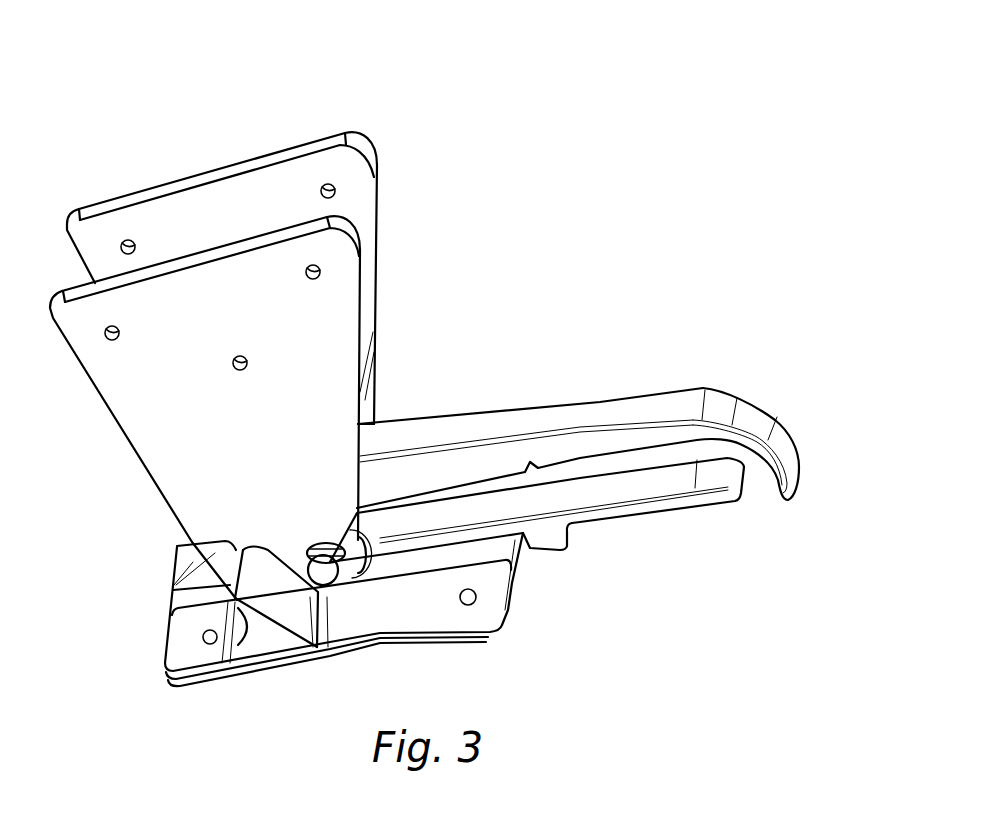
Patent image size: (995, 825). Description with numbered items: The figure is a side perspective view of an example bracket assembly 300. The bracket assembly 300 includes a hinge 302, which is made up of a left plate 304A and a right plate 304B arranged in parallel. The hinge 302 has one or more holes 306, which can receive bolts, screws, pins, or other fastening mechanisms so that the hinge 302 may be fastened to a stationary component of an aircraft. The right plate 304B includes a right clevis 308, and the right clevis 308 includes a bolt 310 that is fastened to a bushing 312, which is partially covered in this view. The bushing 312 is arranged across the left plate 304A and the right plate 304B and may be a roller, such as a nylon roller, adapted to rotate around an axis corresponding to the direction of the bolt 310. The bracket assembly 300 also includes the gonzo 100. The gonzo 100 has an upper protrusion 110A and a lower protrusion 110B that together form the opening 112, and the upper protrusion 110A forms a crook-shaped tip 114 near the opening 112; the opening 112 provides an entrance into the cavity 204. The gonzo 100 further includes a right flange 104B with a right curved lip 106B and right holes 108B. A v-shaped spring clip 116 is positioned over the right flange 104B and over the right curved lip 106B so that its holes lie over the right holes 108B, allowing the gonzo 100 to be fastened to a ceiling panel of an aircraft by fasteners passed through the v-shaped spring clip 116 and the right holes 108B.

The bracket assembly 300 is at (736, 102).
The hinge 302 is at (205, 401).
The left plate 304A is at (168, 184).
The right plate 304B is at (190, 252).
The holes 306 is at (126, 240).
The right clevis 308 is at (190, 542).
The bolt 310 is at (334, 543).
The bushing 312 is at (362, 541).
The gonzo 100 is at (593, 458).
The cavity 204 is at (641, 456).
The upper protrusion 110A is at (425, 417).
The lower protrusion 110B is at (620, 520).
The crook-shaped tip 114 is at (800, 447).
The opening 112 is at (768, 509).
The right flange 104B is at (532, 549).
The v-shaped spring clip 116 is at (339, 609).
The right holes 108B is at (203, 639).
The right curved lip 106B is at (260, 644).